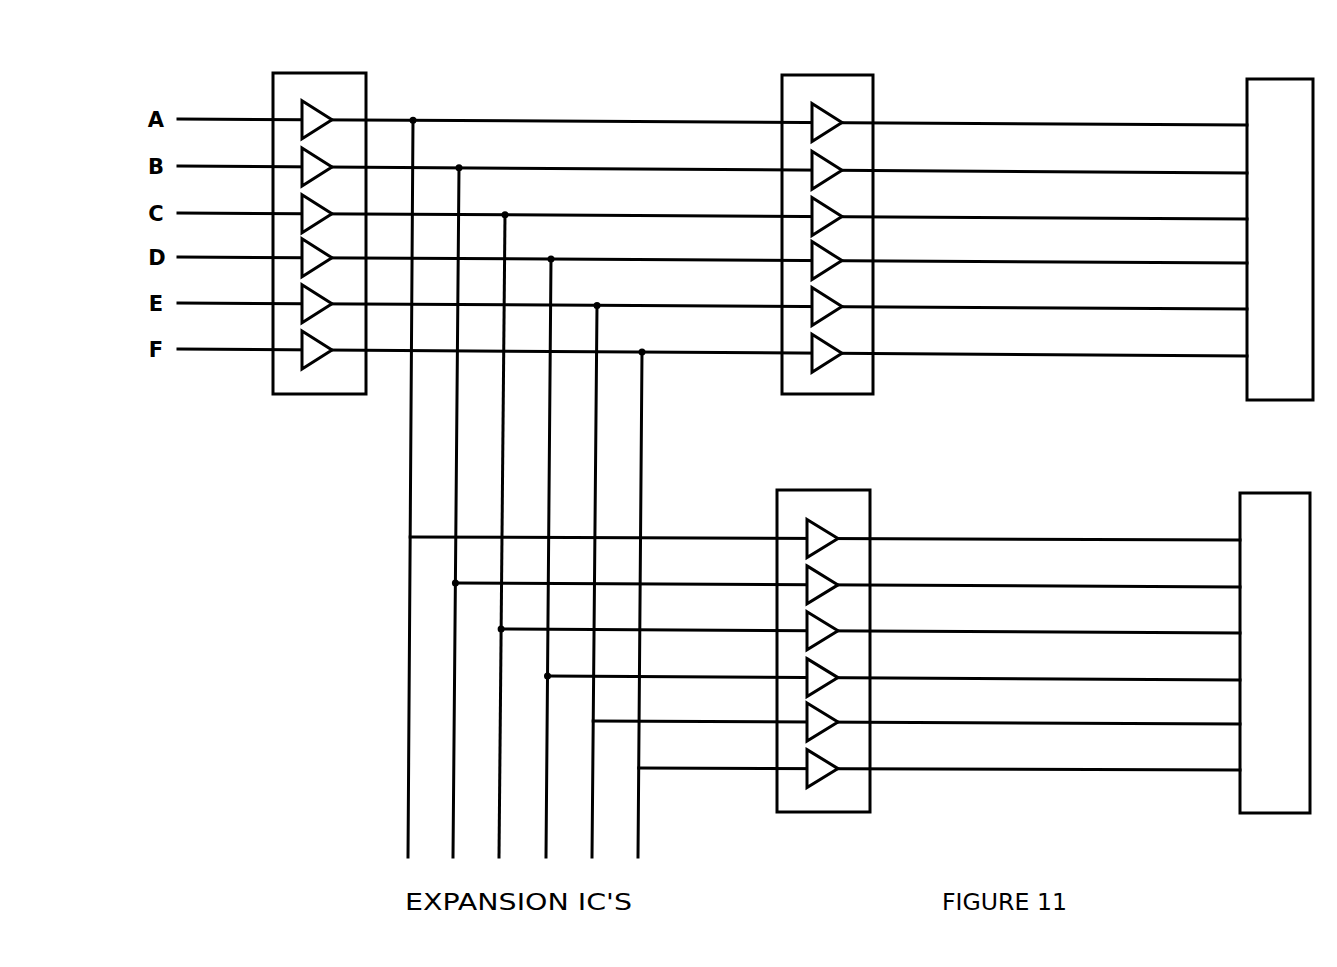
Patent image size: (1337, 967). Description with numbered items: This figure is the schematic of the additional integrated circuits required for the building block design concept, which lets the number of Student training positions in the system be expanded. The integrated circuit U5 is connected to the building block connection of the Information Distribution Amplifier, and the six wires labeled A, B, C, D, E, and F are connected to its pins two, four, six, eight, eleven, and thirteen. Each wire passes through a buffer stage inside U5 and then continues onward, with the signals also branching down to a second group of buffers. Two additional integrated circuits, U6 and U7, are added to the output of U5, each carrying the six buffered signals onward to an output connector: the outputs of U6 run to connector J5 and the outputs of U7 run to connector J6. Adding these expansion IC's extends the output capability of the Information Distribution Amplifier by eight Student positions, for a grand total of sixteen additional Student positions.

The IC U-5 U5 is at (319, 216).
The expansion buffer integrated circuit U6 is at (827, 216).
The expansion buffer integrated circuit U7 is at (823, 634).
The connector J5 is at (1280, 222).
The connector J6 is at (1275, 637).